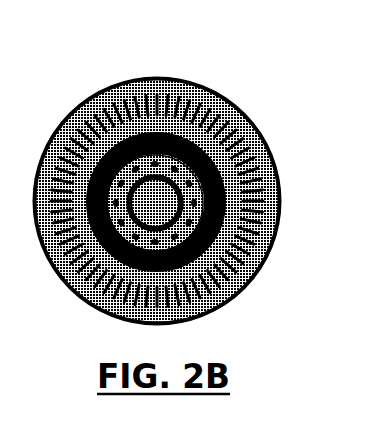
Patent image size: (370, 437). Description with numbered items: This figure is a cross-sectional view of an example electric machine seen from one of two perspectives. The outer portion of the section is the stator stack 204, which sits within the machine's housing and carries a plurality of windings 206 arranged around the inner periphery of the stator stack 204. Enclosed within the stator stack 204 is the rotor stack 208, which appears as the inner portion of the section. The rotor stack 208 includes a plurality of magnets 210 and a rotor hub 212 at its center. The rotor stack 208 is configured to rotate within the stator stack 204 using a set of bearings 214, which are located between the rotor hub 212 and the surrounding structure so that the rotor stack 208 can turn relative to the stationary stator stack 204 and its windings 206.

The stator stack 204 is at (100, 100).
The windings 206 is at (63, 118).
The magnets 210 is at (44, 160).
The bearings 214 is at (36, 188).
The rotor hub 212 is at (37, 221).
The rotor stack 208 is at (58, 276).